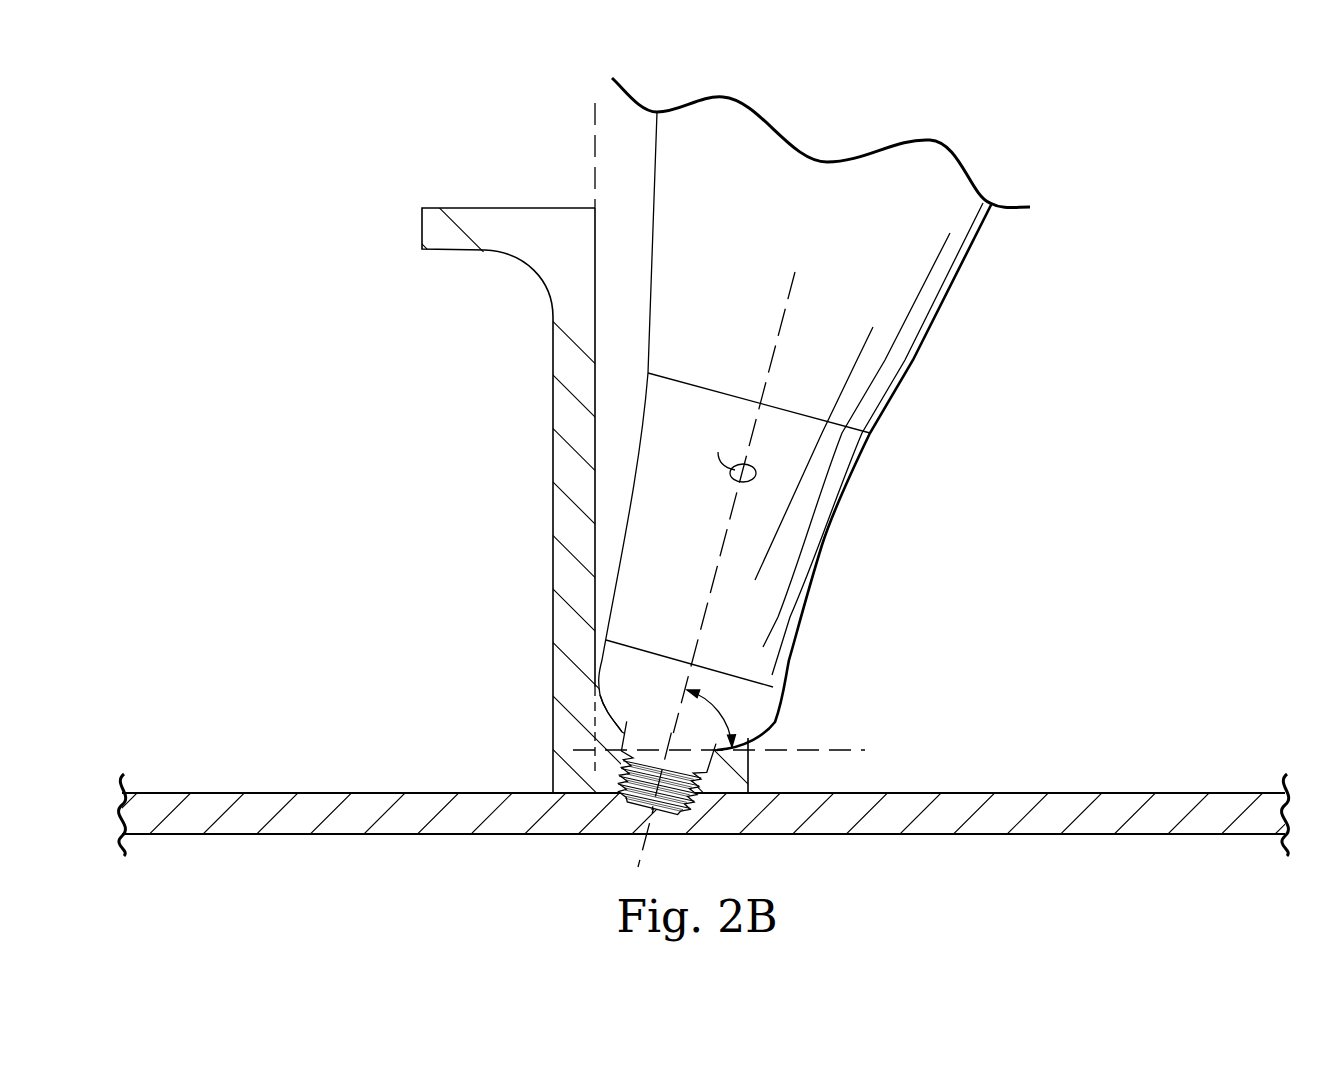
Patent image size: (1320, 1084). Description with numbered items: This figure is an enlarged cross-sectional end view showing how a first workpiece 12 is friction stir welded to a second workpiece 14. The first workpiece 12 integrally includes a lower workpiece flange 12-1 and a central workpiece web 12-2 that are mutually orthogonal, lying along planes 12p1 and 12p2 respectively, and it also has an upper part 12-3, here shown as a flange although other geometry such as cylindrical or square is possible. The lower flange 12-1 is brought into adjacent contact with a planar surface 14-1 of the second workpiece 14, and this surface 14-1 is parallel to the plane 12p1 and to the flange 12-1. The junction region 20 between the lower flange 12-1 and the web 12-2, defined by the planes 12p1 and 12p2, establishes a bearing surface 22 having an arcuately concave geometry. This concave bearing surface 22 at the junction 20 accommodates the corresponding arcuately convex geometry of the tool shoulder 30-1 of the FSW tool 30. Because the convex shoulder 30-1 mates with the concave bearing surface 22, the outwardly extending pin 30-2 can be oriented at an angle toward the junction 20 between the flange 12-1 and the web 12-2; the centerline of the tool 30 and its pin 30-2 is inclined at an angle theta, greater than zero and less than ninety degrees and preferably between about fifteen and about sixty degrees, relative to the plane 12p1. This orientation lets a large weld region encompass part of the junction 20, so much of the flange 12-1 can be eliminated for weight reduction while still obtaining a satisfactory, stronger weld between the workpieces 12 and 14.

The first workpiece 12 is at (544, 412).
The lower workpiece flange 12-1 is at (735, 773).
The central workpiece web 12-2 is at (573, 537).
The upper part 12-3 is at (447, 222).
The workpiece plane 12p1 is at (790, 752).
The workpiece plane 12p2 is at (590, 131).
The second workpiece 14 is at (237, 818).
The planar surface 14-1 is at (1167, 793).
The junction region 20 is at (576, 735).
The bearing surface 22 is at (622, 705).
The FSW tool 30 is at (938, 340).
The tool shoulder 30-1 is at (689, 664).
The pin 30-2 is at (677, 800).